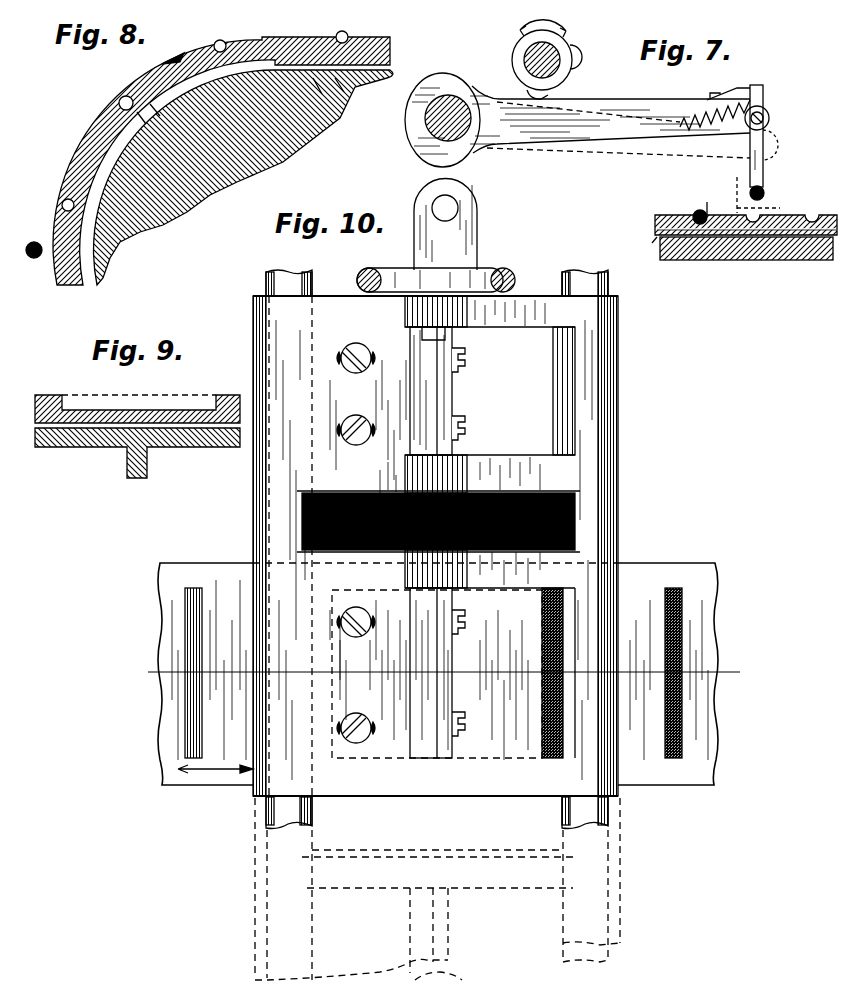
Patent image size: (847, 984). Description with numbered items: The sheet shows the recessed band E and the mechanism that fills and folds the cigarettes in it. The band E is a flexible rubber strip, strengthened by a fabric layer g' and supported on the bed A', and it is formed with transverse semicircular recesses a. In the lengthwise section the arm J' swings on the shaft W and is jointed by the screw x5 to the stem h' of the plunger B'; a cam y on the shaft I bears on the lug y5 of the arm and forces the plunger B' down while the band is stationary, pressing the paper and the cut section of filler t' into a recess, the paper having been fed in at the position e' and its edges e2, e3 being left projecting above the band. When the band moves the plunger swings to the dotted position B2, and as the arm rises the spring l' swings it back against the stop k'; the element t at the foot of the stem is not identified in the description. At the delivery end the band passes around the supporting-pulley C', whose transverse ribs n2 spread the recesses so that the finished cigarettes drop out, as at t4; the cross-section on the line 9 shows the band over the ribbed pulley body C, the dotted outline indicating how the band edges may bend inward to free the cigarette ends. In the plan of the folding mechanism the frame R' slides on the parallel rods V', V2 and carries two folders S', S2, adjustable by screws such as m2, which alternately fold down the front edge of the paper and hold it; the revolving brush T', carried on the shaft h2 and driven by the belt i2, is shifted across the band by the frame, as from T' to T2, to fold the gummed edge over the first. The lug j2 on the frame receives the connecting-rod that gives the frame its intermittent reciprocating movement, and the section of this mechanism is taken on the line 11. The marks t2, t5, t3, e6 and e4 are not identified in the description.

In FIG. 8, the recessed band E is at (100, 131).
In FIG. 7, the recessed band E is at (655, 225).
In FIG. 9, the recessed band E is at (222, 390).
In FIG. 10, the recessed band E is at (438, 674).
In FIG. 8, the cigarette-recesses a is at (60, 206).
In FIG. 7, the cigarette-recesses a is at (813, 215).
In FIG. 9, the cigarette-recesses a is at (165, 401).
In FIG. 8, the supporting-pulley C' is at (243, 177).
In FIG. 8, the transverse ribs or ridges n2 is at (370, 70).
In FIG. 9, the transverse ribs or ridges n2 is at (90, 452).
In FIG. 8, the section line 9 is at (115, 104).
In FIG. 8, the finished cigarette t4 is at (34, 240).
In FIG. 7, the shaft W is at (452, 102).
In FIG. 7, the arm J' is at (611, 120).
In FIG. 7, the shaft I is at (522, 50).
In FIG. 7, the cam y is at (580, 56).
In FIG. 7, the lug y5 is at (542, 96).
In FIG. 7, the spring l' is at (715, 101).
In FIG. 7, the stop k' is at (728, 83).
In FIG. 7, the plunger stem h' is at (771, 136).
In FIG. 7, the screw x5 is at (770, 116).
In FIG. 7, the plunger B' is at (782, 185).
In FIG. 7, the swung plunger position B2 is at (748, 191).
In FIG. 7, the pin t is at (766, 196).
In FIG. 7, the front paper edge e3 is at (697, 210).
In FIG. 7, the projecting paper flap e2 is at (716, 205).
In FIG. 7, the paper position e' is at (793, 205).
In FIG. 7, the bed A' is at (746, 262).
In FIG. 7, the fabric layer g' is at (647, 248).
In FIG. 9, the rib C is at (137, 452).
In FIG. 10, the revolving brush T' is at (435, 533).
In FIG. 10, the projecting lug j2 is at (470, 245).
In FIG. 10, the belt i2 is at (513, 282).
In FIG. 10, the second folder S2 is at (453, 392).
In FIG. 10, the brush shaft h2 is at (452, 340).
In FIG. 10, the adjusting screw m2 is at (466, 437).
In FIG. 10, the sliding frame R' is at (357, 480).
In FIG. 10, the screw t2 is at (366, 420).
In FIG. 10, the screw t5 is at (362, 715).
In FIG. 10, the folder S' is at (452, 560).
In FIG. 10, the bar t3 is at (202, 612).
In FIG. 10, the cut section of filler t' is at (684, 663).
In FIG. 10, the stop e6 is at (665, 752).
In FIG. 10, the stop e4 is at (682, 752).
In FIG. 10, the section line 11 is at (442, 673).
In FIG. 10, the guide rod V' is at (302, 812).
In FIG. 10, the guide rod V2 is at (608, 812).
In FIG. 10, the shifted brush position T2 is at (437, 889).